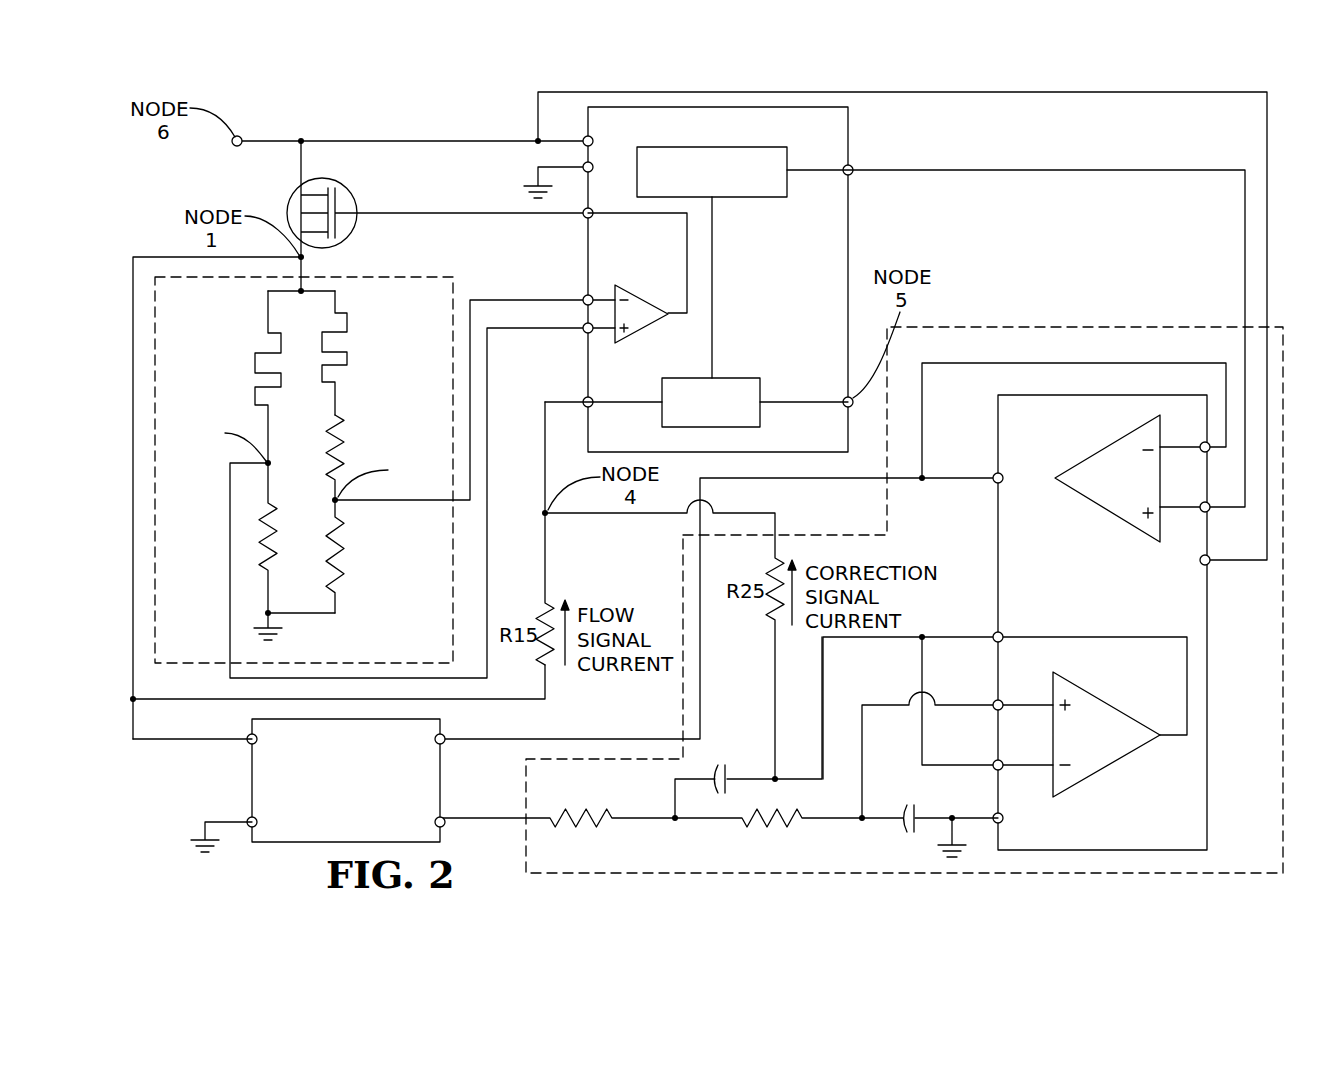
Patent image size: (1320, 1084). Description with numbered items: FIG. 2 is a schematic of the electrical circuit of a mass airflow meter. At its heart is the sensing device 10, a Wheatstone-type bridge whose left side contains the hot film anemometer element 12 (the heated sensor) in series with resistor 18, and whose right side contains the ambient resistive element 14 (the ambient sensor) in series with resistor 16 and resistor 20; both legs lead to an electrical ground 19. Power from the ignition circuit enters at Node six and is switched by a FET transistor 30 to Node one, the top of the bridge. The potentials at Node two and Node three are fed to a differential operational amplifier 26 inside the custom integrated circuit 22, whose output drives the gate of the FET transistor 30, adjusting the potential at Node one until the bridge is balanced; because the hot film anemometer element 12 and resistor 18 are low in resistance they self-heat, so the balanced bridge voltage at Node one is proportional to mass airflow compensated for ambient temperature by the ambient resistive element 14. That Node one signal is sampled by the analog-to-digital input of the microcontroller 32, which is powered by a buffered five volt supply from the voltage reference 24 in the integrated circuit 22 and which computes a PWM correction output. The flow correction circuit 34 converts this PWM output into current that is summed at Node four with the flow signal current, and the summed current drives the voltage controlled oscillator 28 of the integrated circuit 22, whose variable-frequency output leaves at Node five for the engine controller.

The sensing device 10 is at (450, 278).
The hot film anemometer element 12 is at (267, 342).
The ambient resistive element 14 is at (343, 312).
The resistor 16 is at (338, 432).
The resistor 18 is at (265, 540).
The electrical ground 19 is at (266, 611).
The resistor 20 is at (340, 578).
The custom integrated circuit 22 is at (838, 126).
The voltage reference 24 is at (755, 200).
The differential operational amplifier 26 is at (618, 288).
The voltage controlled oscillator 28 is at (735, 378).
The FET transistor 30 is at (345, 190).
The microcontroller 32 is at (257, 767).
The flow correction circuit 34 is at (1100, 327).